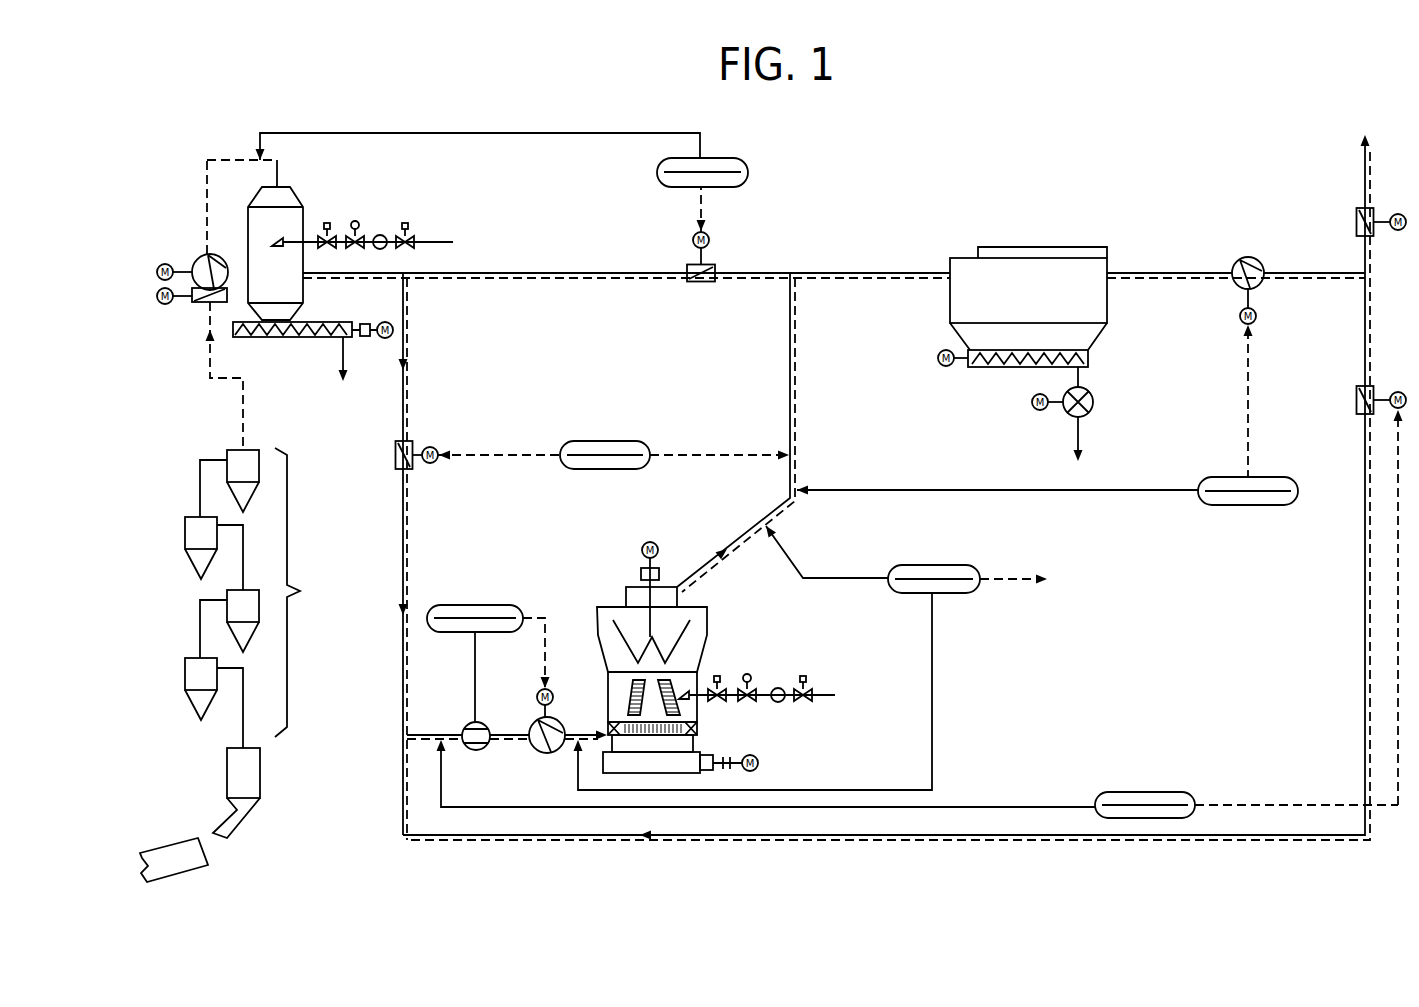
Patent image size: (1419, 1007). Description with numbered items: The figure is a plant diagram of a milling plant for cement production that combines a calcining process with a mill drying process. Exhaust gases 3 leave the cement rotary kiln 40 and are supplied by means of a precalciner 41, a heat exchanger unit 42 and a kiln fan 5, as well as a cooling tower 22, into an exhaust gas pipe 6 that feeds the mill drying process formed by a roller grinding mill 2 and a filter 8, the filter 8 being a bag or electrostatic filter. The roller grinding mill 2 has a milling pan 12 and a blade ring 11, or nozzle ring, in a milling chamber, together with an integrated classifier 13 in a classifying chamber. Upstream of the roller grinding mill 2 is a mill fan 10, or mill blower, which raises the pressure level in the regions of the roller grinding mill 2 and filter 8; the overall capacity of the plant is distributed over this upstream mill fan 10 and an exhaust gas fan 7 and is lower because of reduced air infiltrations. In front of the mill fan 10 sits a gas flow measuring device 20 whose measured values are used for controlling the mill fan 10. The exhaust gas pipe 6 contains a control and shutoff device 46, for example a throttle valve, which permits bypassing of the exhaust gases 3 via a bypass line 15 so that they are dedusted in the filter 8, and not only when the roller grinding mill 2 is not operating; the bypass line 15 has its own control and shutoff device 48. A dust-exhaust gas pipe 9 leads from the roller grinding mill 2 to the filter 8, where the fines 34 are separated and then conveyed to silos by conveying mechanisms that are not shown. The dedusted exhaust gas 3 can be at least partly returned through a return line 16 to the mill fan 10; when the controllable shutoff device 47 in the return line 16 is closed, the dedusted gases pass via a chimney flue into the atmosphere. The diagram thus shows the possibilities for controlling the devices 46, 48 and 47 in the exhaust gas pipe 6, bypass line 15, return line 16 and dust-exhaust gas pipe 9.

The roller grinding mill 2 is at (598, 608).
The exhaust gases 3 is at (794, 290).
The kiln fan 5 is at (200, 256).
The exhaust gas pipe 6 is at (407, 385).
The exhaust gas fan 7 is at (1240, 258).
The filter 8 is at (1053, 273).
The dust-exhaust gas pipe 9 is at (797, 388).
The mill fan 10 is at (547, 755).
The blade ring 11 is at (697, 728).
The milling pan 12 is at (678, 738).
The integrated classifier 13 is at (690, 630).
The bypass line 15 is at (538, 268).
The return line 16 is at (1365, 685).
The gas flow measuring device 20 is at (480, 752).
The cooling tower 22 is at (290, 212).
The fines 34 is at (1083, 425).
The cement rotary kiln 40 is at (200, 850).
The precalciner 41 is at (250, 778).
The heat exchanger unit 42 is at (262, 598).
The control and shutoff device 46 is at (395, 458).
The controllable shutoff device 47 is at (1356, 403).
The control and shutoff device 48 is at (715, 268).